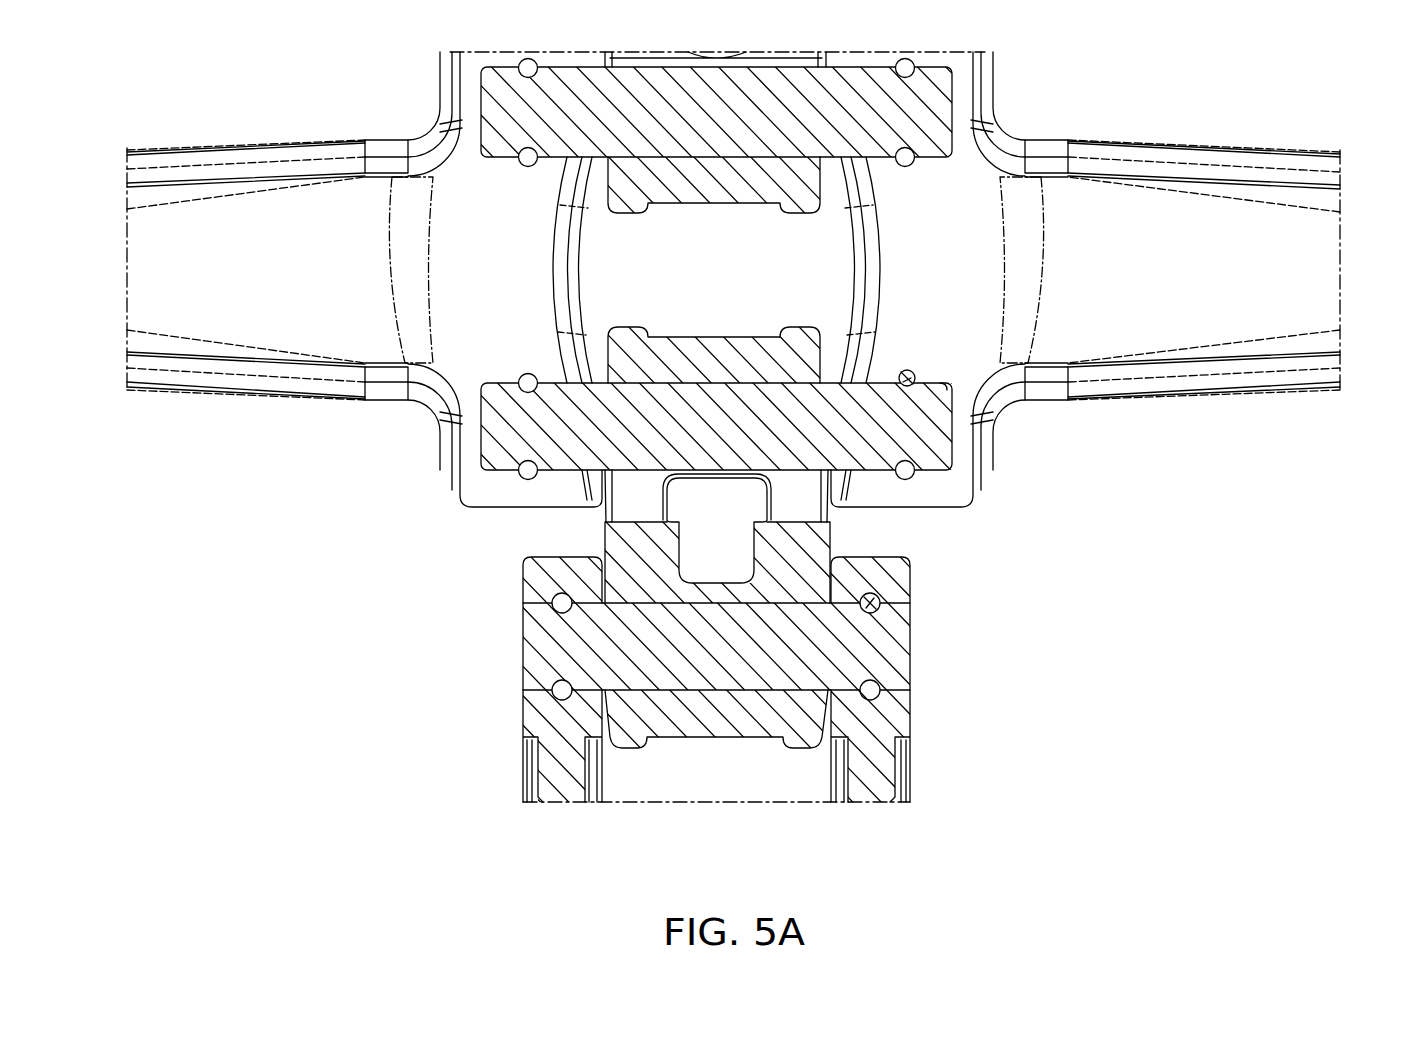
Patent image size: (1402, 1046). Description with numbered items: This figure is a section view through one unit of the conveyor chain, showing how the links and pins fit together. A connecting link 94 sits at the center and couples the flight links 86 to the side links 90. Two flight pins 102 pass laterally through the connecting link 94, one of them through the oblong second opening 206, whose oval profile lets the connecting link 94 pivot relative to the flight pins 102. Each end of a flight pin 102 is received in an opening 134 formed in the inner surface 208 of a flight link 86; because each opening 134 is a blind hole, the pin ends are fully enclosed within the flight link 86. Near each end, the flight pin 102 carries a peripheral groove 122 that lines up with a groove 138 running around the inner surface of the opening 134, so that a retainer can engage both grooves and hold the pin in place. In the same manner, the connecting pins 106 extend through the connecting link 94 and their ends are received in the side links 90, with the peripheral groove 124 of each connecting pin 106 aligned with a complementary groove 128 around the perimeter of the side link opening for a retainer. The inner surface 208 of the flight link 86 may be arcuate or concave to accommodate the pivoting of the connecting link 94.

The flight link 86 is at (1197, 170).
The flight pin 102 is at (930, 102).
The inner surface 208 is at (855, 212).
The opening 134 is at (880, 370).
The groove 138 is at (909, 372).
The peripheral groove 122 is at (948, 392).
The second opening 206 is at (772, 515).
The groove 128 is at (873, 600).
The peripheral groove 124 is at (878, 606).
The connecting pin 106 is at (885, 650).
The side link 90 is at (877, 758).
The connecting link 94 is at (693, 708).